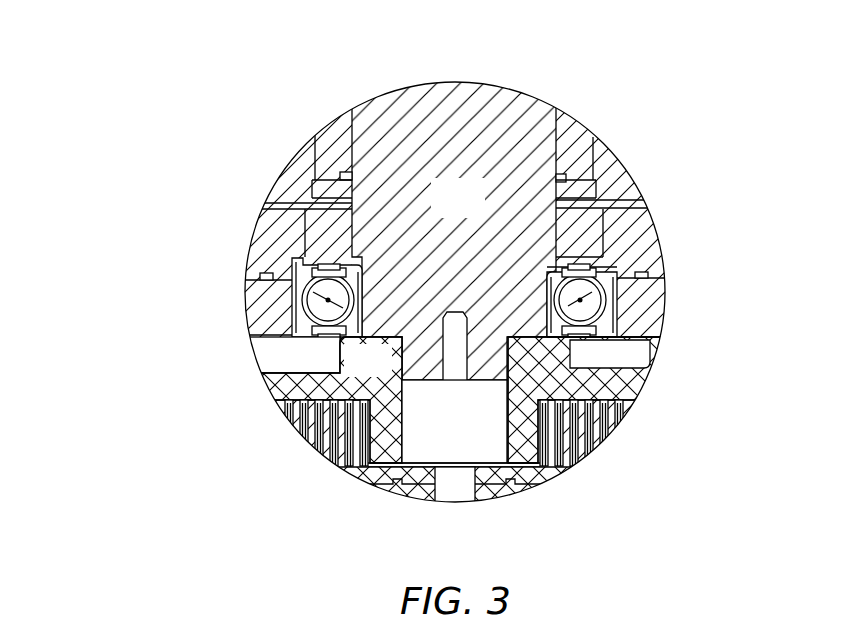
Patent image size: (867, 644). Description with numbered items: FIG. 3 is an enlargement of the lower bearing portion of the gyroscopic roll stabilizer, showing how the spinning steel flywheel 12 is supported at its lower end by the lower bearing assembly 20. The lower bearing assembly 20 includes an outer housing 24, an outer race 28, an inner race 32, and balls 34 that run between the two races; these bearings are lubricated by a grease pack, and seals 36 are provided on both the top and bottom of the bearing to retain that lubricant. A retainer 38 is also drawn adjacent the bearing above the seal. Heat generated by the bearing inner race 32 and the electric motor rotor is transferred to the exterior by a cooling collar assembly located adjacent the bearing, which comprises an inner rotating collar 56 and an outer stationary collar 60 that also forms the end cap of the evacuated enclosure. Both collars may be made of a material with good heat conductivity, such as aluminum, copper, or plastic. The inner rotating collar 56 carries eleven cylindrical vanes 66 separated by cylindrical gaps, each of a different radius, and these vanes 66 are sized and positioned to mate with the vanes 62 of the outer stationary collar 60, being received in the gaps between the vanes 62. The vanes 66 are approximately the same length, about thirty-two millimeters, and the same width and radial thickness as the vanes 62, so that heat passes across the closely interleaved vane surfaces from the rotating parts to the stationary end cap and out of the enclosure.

The flywheel 12 is at (454, 220).
The lower bearing assembly 20 is at (230, 297).
The outer housing 24 is at (270, 303).
The outer race 28 is at (226, 214).
The inner race 32 is at (353, 281).
The balls 34 is at (297, 332).
The seals 36 is at (600, 263).
The retainer 38 is at (582, 253).
The inner rotating collar 56 is at (321, 400).
The outer stationary collar 60 is at (418, 482).
The vanes 62 is at (517, 463).
The vanes 66 is at (597, 420).